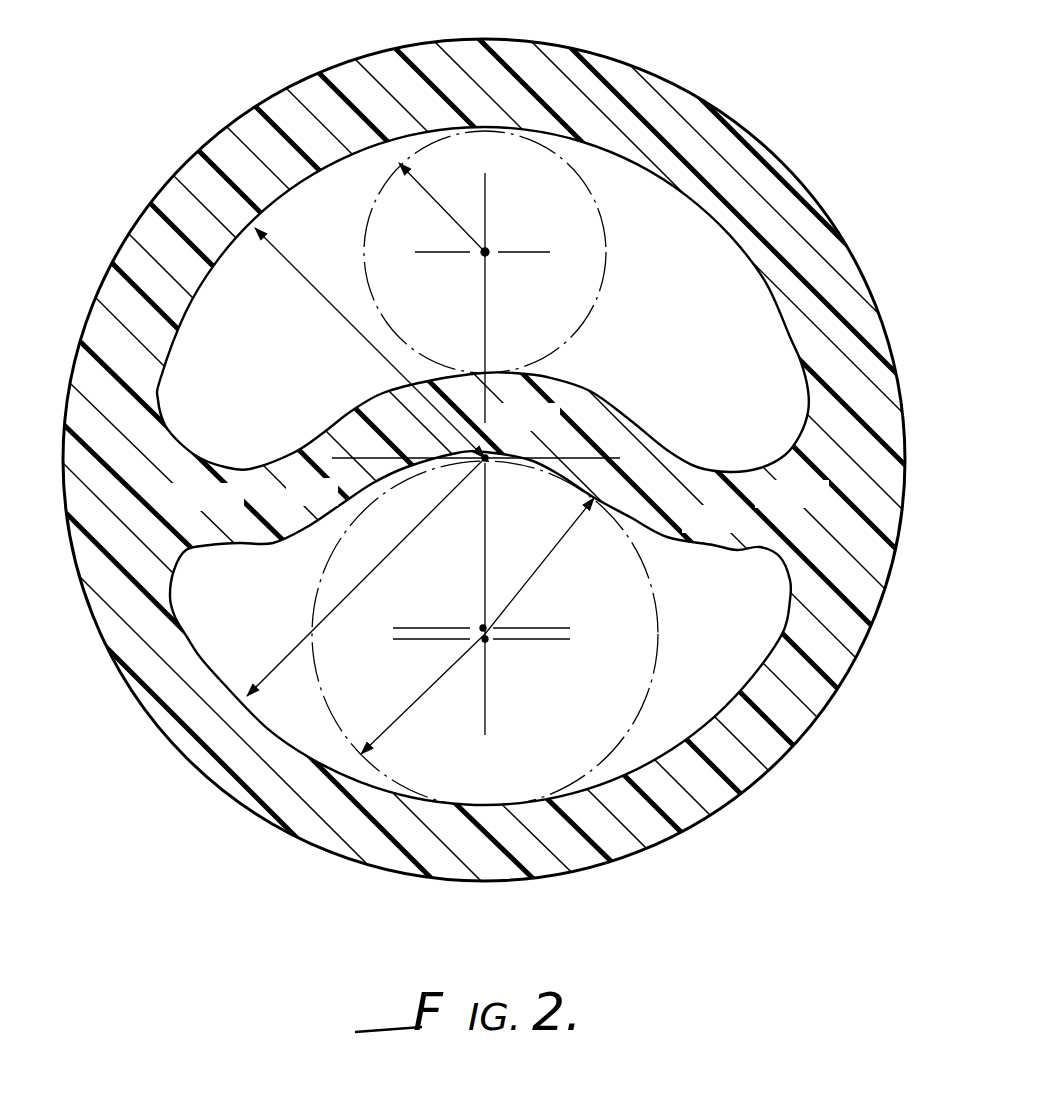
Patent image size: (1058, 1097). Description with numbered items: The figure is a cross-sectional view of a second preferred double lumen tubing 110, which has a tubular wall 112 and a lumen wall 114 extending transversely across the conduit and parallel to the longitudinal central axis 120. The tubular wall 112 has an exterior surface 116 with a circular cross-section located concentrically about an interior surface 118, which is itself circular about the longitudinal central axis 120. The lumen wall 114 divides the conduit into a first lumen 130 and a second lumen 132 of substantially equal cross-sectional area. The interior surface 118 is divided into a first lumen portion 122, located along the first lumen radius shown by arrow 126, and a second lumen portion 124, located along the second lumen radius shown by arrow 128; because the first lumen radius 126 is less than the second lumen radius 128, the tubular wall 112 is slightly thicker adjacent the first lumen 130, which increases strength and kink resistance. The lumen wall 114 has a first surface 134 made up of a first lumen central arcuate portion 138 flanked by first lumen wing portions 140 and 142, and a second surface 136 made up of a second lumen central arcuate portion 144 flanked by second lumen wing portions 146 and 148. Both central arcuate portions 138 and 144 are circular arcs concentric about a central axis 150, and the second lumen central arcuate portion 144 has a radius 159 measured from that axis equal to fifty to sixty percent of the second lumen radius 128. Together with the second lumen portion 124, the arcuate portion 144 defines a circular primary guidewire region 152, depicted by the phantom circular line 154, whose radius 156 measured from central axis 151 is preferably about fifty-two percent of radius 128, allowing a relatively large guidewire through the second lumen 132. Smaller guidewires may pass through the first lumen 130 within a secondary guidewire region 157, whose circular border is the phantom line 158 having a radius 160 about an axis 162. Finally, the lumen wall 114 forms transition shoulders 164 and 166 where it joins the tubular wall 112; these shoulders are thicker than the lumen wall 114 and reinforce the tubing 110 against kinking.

The double lumen tubing 110 is at (529, 548).
The tubular wall 112 is at (614, 70).
The lumen wall 114 is at (525, 418).
The exterior surface 116 is at (302, 72).
The interior surface 118 is at (792, 337).
The longitudinal central axis 120 is at (488, 461).
The first lumen portion 122 is at (683, 197).
The second lumen portion 124 is at (772, 664).
The first lumen radius 126 is at (354, 322).
The second lumen radius 128 is at (372, 572).
The first lumen 130 is at (483, 299).
The second lumen 132 is at (480, 628).
The first surface 134 is at (642, 420).
The second surface 136 is at (676, 543).
The first lumen central arcuate portion 138 is at (538, 378).
The first lumen wing portion 140 is at (222, 452).
The first lumen wing portion 142 is at (773, 450).
The second lumen central arcuate portion 144 is at (370, 492).
The second lumen wing portion 146 is at (254, 547).
The second lumen wing portion 148 is at (736, 546).
The central axis 150 is at (488, 641).
The central axis 151 is at (472, 624).
The primary guidewire region 152 is at (485, 634).
The phantom circular line 154 is at (312, 600).
The radius of the guidewire region 156 is at (430, 688).
The secondary guidewire region 157 is at (524, 298).
The phantom line 158 is at (600, 294).
The radius 159 is at (550, 556).
The radius 160 is at (446, 205).
The axis 162 is at (488, 254).
The transition shoulder 164 is at (207, 498).
The transition shoulder 166 is at (792, 495).